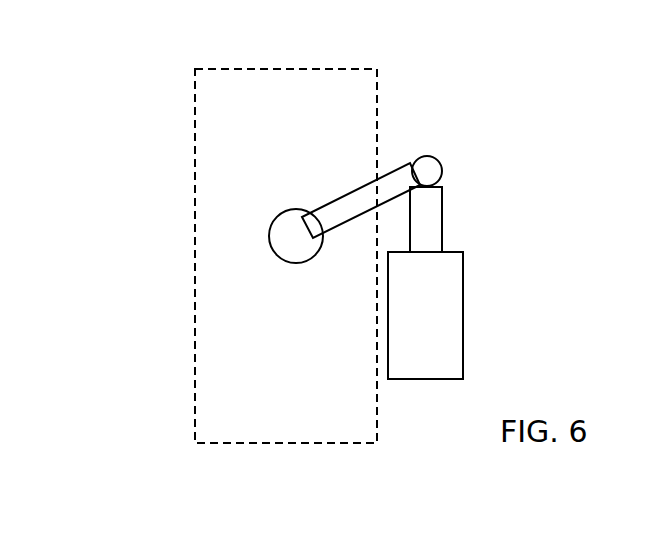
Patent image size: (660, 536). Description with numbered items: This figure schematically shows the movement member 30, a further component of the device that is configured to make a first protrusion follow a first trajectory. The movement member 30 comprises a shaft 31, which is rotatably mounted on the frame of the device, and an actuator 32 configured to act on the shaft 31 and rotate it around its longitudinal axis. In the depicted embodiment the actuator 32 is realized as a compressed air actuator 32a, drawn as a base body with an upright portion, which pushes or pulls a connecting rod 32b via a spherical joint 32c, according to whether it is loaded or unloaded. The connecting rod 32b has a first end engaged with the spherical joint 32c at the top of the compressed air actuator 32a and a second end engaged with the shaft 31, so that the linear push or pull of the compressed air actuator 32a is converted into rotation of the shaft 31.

The movement member 30 is at (578, 222).
The shaft 31 is at (275, 253).
The actuator 32 is at (404, 195).
The compressed air actuator 32a is at (463, 272).
The connecting rod 32b is at (335, 197).
The spherical joint 32c is at (442, 166).